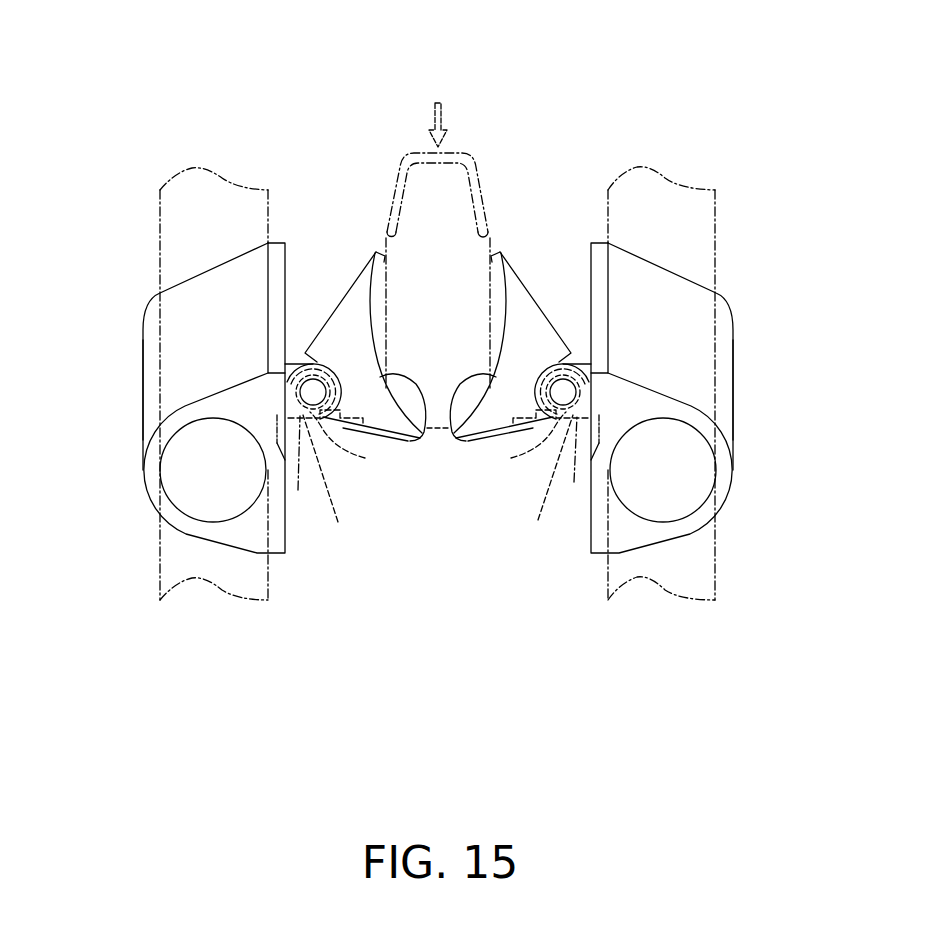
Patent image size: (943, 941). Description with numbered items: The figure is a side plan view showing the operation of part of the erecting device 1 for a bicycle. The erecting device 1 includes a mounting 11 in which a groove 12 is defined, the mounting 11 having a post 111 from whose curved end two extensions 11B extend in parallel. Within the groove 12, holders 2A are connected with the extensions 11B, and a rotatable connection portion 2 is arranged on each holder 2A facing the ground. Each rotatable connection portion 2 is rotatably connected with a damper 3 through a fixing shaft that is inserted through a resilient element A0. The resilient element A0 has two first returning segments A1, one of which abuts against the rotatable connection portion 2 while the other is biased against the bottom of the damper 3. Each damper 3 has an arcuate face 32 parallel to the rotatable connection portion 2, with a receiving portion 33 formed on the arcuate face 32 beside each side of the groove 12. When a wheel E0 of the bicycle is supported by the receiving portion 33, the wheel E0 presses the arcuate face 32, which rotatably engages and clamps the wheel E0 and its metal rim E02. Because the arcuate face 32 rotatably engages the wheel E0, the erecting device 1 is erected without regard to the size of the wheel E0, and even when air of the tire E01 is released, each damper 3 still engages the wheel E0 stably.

The erecting device 1 is at (417, 383).
The rotatable connection portion 2 is at (313, 412).
The holder 2A is at (142, 368).
The damper 3 is at (437, 425).
The mounting 11 is at (468, 316).
The post 111 is at (682, 184).
The extension 11B is at (170, 222).
The groove 12 is at (448, 553).
The arcuate face 32 is at (422, 440).
The receiving portion 33 is at (438, 526).
The resilient element A0 is at (438, 485).
The first returning segment A1 is at (439, 468).
The wheel E0 is at (479, 215).
The tire E01 is at (384, 327).
The metal rim E02 is at (457, 152).